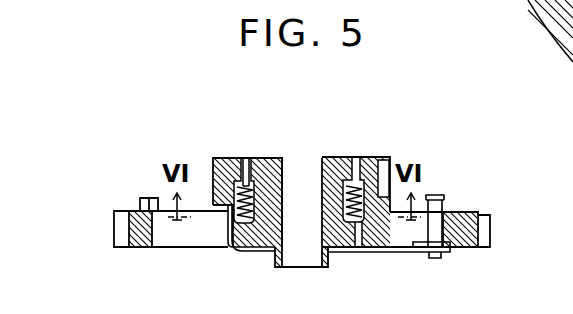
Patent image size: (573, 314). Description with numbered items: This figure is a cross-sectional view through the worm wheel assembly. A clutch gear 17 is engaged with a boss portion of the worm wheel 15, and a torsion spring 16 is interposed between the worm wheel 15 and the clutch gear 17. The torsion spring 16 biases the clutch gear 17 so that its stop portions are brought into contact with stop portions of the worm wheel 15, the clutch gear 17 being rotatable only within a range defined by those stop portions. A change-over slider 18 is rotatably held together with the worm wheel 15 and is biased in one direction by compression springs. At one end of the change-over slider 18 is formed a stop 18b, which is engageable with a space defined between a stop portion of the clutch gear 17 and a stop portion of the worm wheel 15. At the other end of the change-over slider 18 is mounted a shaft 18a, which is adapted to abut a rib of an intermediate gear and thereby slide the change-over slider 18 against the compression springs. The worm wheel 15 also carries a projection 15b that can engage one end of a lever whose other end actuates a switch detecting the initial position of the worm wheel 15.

The worm wheel 15 is at (112, 228).
The projection 15b is at (143, 197).
The torsion spring 16 is at (236, 187).
The clutch gear 17 is at (245, 160).
The change-over slider 18 is at (366, 254).
The shaft 18a is at (440, 196).
The stop 18b is at (223, 250).